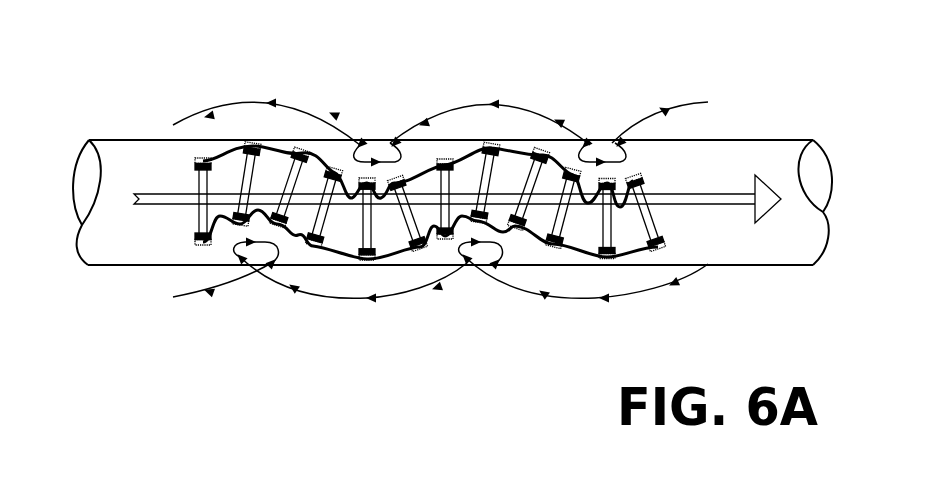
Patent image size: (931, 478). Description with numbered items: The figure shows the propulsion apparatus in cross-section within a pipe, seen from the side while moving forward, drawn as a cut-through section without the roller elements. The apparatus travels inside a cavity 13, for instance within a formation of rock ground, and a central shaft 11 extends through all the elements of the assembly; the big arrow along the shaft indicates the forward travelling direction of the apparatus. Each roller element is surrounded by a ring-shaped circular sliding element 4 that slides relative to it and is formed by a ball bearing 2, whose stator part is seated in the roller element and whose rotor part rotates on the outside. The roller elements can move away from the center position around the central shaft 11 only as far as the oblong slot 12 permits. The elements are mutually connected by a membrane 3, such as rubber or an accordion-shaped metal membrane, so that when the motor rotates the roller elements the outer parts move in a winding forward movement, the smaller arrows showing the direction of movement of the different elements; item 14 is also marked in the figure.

The ball bearing 2 is at (645, 177).
The membrane 3 is at (628, 257).
The sliding element 4 is at (548, 250).
The central shaft 11 is at (717, 208).
The oblong slot 12 is at (413, 258).
The cavity 13 is at (725, 137).
The magnetic element 14 is at (355, 265).